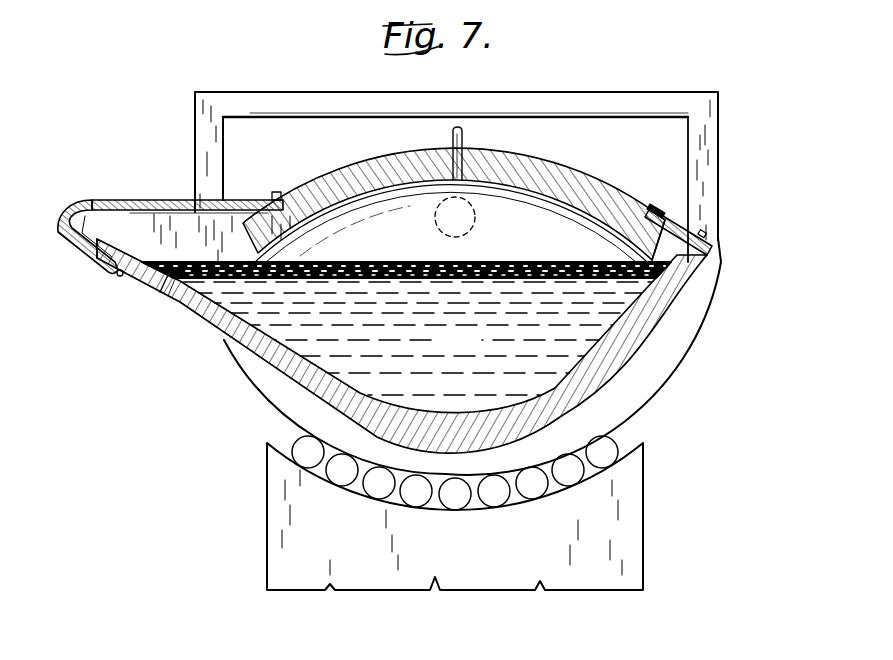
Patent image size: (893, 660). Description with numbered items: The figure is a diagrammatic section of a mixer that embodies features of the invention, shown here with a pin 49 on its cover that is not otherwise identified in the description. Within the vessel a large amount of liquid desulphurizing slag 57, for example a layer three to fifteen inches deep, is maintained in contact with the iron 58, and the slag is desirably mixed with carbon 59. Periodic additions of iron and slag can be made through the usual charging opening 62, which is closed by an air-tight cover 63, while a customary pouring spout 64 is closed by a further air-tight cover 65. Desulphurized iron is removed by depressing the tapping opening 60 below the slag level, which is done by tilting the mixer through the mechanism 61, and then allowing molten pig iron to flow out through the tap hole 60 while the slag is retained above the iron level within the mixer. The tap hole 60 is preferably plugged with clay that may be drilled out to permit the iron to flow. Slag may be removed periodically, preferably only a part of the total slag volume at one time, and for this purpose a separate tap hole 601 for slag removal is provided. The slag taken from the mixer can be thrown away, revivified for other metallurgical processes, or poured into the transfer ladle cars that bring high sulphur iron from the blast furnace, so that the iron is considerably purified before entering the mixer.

The pin 49 is at (463, 135).
The pouring spout 64 is at (98, 232).
The air-tight cover 65 is at (83, 247).
The tapping opening 60 is at (183, 296).
The separate tap hole 601 is at (158, 272).
The liquid desulphurizing slag 57 is at (518, 262).
The carbon 59 is at (587, 250).
The iron 58 is at (417, 338).
The air-tight cover 63 is at (682, 212).
The charging opening 62 is at (690, 255).
The tilting mechanism 61 is at (572, 478).